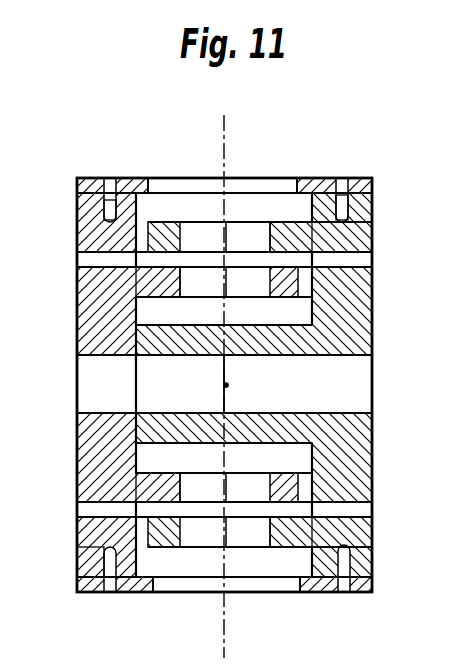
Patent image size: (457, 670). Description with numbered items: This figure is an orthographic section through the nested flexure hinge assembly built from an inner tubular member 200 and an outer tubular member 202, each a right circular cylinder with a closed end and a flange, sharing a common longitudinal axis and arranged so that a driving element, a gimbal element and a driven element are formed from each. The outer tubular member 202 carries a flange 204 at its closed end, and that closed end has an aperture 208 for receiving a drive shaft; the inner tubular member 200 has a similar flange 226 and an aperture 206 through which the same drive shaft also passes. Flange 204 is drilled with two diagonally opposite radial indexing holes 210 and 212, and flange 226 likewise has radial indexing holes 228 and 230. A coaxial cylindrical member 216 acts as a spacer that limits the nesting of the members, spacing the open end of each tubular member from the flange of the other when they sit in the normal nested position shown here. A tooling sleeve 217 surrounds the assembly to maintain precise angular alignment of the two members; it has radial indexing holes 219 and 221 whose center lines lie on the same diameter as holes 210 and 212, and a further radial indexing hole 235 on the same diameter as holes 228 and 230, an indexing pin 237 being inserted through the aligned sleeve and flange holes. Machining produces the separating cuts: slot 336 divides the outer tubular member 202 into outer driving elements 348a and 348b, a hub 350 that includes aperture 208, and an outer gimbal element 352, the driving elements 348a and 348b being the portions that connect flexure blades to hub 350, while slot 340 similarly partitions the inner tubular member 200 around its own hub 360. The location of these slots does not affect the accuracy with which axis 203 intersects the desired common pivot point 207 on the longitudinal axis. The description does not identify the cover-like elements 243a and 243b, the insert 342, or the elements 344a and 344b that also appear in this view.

The inner tubular member 200 is at (76, 278).
The outer tubular member 202 is at (374, 289).
The axis 203 is at (226, 128).
The flange 204 is at (365, 230).
The aperture 206 is at (103, 412).
The common pivot point 207 is at (228, 386).
The aperture 208 is at (345, 355).
The radial indexing hole 210 is at (343, 203).
The radial indexing hole 212 is at (350, 562).
The cylindrical member 216 is at (192, 354).
The tooling sleeve 217 is at (138, 178).
The radial indexing hole 219 is at (343, 183).
The radial indexing hole 221 is at (345, 583).
The flange 226 is at (77, 228).
The radial indexing hole 228 is at (92, 563).
The radial indexing hole 230 is at (103, 208).
The radial indexing hole 235 is at (103, 207).
The indexing pin 237 is at (113, 583).
The upper cover plate 243a is at (270, 183).
The lower cover plate 243b is at (257, 583).
The slot 336 is at (365, 260).
The slot 340 is at (85, 258).
The left seal insert 342 is at (170, 229).
The upper right seal insert 344a is at (282, 228).
The lower right seal insert 344b is at (283, 543).
The outer driving element 348a is at (165, 480).
The outer driving element 348b is at (173, 290).
The hub 350 is at (366, 437).
The outer gimbal element 352 is at (285, 293).
The hub 360 is at (80, 463).